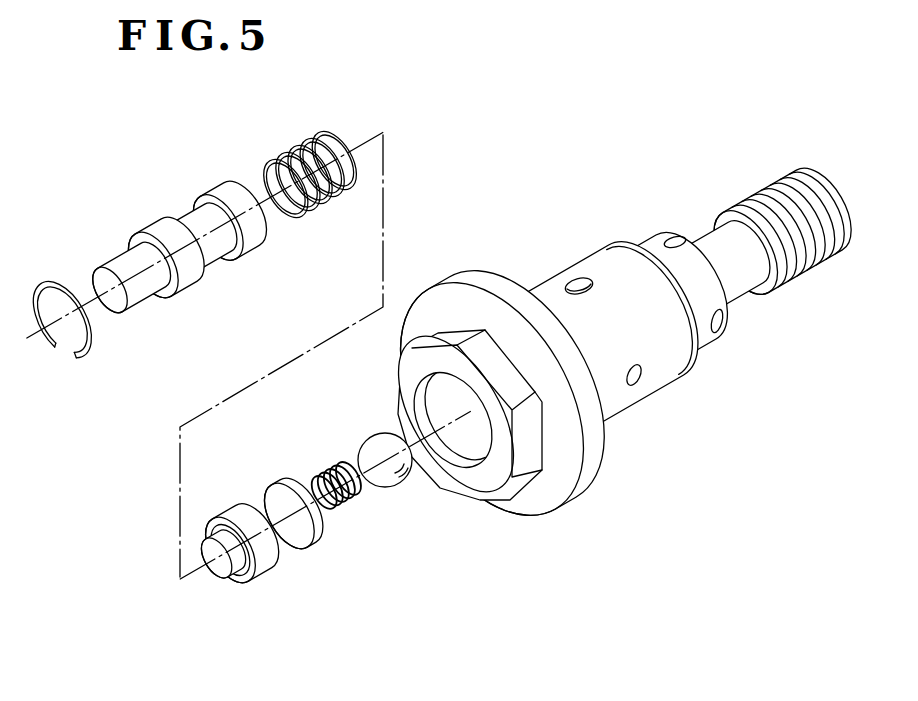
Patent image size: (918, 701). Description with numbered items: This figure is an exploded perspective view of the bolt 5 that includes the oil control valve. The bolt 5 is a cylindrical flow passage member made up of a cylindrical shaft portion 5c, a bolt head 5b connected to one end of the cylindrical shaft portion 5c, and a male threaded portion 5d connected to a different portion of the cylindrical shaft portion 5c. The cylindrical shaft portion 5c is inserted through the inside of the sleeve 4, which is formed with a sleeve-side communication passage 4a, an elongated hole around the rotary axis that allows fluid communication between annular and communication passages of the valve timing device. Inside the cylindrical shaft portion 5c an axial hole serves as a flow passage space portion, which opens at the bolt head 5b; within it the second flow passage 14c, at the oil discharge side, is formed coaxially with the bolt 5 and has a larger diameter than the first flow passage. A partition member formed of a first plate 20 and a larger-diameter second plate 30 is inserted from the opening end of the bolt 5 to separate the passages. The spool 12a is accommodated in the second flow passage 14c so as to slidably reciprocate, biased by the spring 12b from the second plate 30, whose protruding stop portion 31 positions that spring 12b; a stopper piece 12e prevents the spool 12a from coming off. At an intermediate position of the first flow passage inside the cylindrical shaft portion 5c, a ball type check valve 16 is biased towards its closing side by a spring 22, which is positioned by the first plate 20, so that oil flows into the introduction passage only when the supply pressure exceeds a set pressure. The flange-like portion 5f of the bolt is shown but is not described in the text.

The sleeve 4 is at (677, 368).
The sleeve-side communication passage 4a is at (577, 281).
The bolt 5 is at (466, 271).
The bolt head 5b is at (475, 483).
The cylindrical shaft portion 5c is at (638, 242).
The male threaded portion 5d is at (802, 272).
The flange portion 5f is at (590, 478).
The spool 12a is at (150, 222).
The spring 12b is at (296, 148).
The stopper piece 12e is at (100, 342).
The second flow passage 14c is at (461, 397).
The check valve 16 is at (377, 442).
The first plate 20 is at (284, 480).
The spring 22 is at (345, 502).
The second plate 30 is at (270, 560).
The stop portion 31 is at (228, 563).